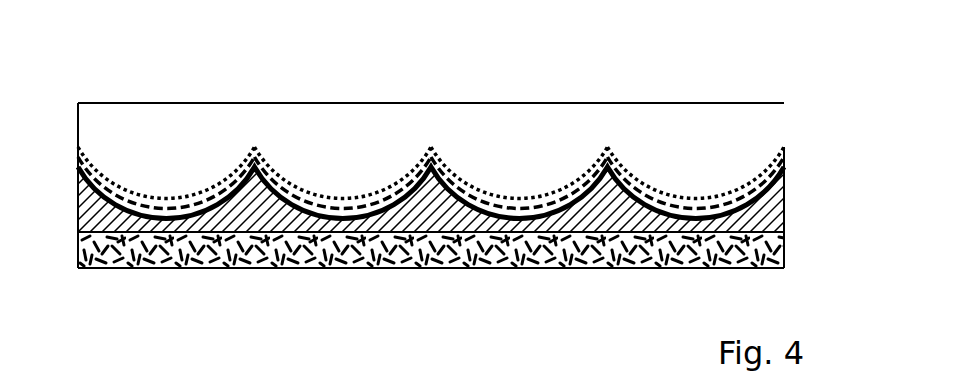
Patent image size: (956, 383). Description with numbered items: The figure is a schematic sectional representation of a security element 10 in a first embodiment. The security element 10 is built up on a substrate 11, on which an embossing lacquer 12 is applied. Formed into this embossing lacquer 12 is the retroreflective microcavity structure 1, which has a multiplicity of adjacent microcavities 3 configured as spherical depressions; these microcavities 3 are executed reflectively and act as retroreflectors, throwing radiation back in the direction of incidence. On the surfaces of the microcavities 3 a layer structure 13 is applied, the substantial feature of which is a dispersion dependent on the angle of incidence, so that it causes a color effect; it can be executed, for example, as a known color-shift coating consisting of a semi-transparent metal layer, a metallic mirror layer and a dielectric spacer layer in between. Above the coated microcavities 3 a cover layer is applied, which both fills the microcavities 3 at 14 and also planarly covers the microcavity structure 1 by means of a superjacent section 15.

The security element 10 is at (458, 62).
The microcavity structure 1 is at (408, 151).
The microcavities 3 is at (78, 218).
The substrate 11 is at (433, 267).
The embossing lacquer 12 is at (784, 207).
The layer structure 13 is at (82, 184).
The cover layer filling 14 is at (518, 173).
The superjacent section 15 is at (675, 115).